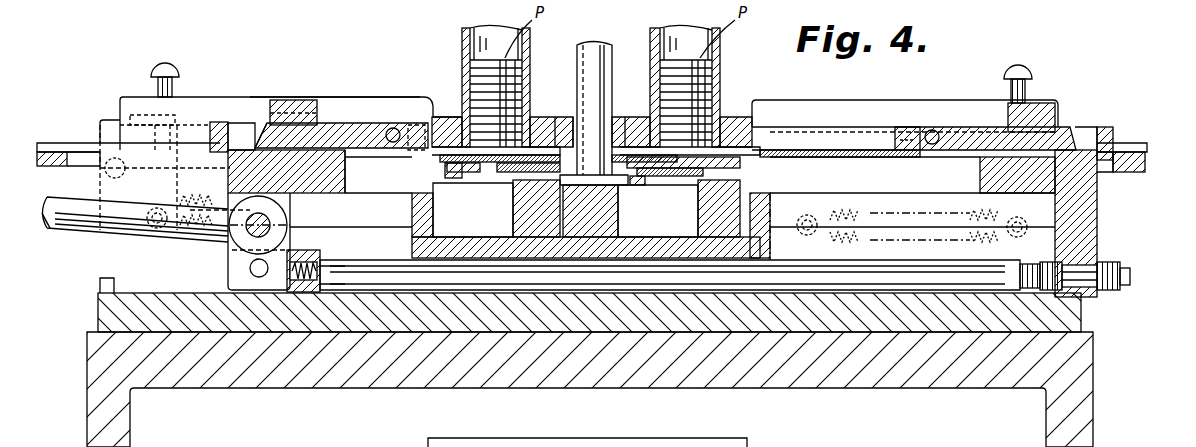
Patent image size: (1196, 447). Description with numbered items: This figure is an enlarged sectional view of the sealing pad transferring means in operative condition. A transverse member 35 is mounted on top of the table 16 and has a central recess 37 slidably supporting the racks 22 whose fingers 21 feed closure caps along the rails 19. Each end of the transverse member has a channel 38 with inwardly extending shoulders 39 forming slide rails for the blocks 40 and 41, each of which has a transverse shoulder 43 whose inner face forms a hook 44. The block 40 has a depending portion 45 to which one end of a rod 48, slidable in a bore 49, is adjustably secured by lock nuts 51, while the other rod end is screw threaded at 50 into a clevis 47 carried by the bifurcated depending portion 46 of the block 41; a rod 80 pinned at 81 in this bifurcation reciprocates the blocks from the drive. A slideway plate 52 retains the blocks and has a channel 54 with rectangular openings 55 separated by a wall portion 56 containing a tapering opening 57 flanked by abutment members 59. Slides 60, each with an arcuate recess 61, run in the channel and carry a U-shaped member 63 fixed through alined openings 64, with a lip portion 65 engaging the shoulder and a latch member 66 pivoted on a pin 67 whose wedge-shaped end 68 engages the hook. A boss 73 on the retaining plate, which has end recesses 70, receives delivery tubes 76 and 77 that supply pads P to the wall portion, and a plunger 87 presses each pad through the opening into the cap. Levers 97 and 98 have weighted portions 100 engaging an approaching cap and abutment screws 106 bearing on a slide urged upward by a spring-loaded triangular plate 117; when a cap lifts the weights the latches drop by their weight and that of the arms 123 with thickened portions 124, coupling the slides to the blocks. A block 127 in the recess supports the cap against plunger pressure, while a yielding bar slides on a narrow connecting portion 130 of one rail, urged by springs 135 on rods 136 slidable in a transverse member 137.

The table 16 is at (1088, 408).
The transverse member 35 is at (1072, 323).
The channel 38 is at (100, 280).
The channel 54 is at (52, 143).
The rectangular openings 55 is at (82, 145).
The slideway plate 52 is at (48, 167).
The U-shaped member 63 is at (222, 122).
The abutment screw 106 is at (172, 63).
The lip portion 65 is at (210, 122).
The transverse shoulder 43 is at (240, 148).
The hook 44 is at (257, 148).
The latch member 66 is at (350, 124).
The wedge-shaped end 68 is at (270, 140).
The arm 123 is at (288, 100).
The portion of increased thickness 124 is at (312, 125).
The lever 98 is at (337, 97).
The pin 67 is at (393, 128).
The alined openings 64 is at (416, 125).
The raised portion or boss 73 is at (450, 117).
The delivery tube 77 is at (462, 30).
The delivery tube 76 is at (722, 42).
The plunger 87 is at (606, 44).
The weighted portion 100 is at (566, 98).
The slides 60 is at (553, 117).
The abutment members 59 is at (640, 117).
The rectangular recesses 70 is at (770, 127).
The lever 97 is at (873, 110).
The recess 61 is at (768, 160).
The narrow connecting portion 130 is at (500, 172).
The springs 135 is at (470, 172).
The transverse member 137 is at (445, 178).
The rods 136 is at (473, 210).
The wall portion 56 is at (655, 168).
The fingers 21 is at (686, 176).
The rails 19 is at (635, 185).
The opening 57 is at (628, 186).
The racks 22 is at (512, 222).
The recess 37 is at (462, 250).
The block 127 is at (583, 226).
The bore 49 is at (760, 260).
The block 41 is at (322, 190).
The shoulders 39 is at (397, 195).
The rod 48 is at (872, 262).
The triangular plate 117 is at (140, 215).
The block 40 is at (1090, 183).
The depending portion 45 is at (1097, 228).
The lock nuts 51 is at (1118, 264).
The rod 80 is at (66, 232).
The pin 81 is at (252, 231).
The bifurcated depending portion 46 is at (235, 277).
The clevis 47 is at (312, 250).
The screw threaded connection 50 is at (322, 268).